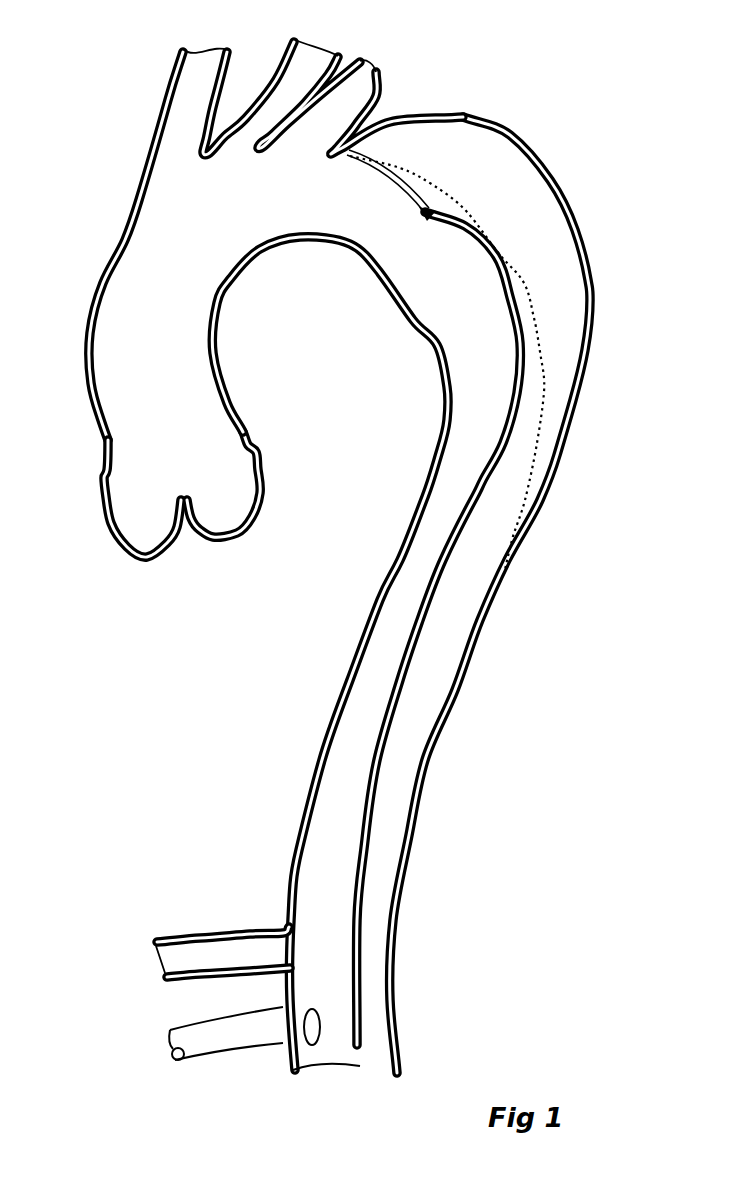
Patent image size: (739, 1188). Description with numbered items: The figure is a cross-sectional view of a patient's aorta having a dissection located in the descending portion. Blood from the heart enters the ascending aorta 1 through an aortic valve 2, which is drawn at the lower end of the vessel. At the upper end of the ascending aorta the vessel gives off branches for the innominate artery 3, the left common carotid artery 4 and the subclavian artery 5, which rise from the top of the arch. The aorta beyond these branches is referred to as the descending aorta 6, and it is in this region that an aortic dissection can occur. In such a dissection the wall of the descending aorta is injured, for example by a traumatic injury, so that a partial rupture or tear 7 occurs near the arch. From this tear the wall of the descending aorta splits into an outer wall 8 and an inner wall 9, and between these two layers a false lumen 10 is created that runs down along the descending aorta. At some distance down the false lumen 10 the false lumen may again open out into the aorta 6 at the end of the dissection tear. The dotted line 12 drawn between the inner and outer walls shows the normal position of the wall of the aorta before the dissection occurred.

The ascending aorta 1 is at (140, 363).
The aortic valve 2 is at (185, 505).
The innominate artery 3 is at (180, 100).
The left common carotid artery 4 is at (283, 67).
The subclavian artery 5 is at (357, 87).
The descending aorta 6 is at (430, 317).
The tear 7 is at (445, 210).
The outer wall 8 is at (590, 278).
The inner wall 9 is at (521, 330).
The false lumen 10 is at (522, 204).
The dotted line 12 is at (538, 367).